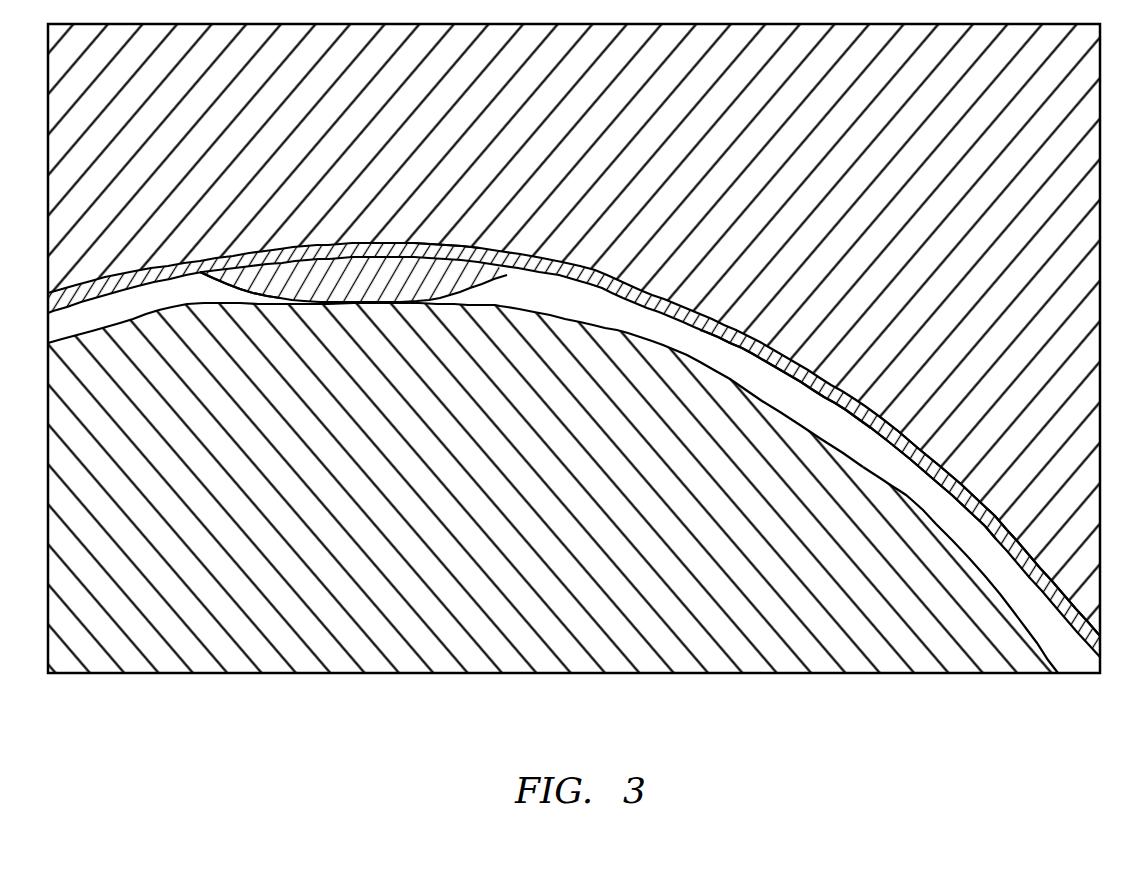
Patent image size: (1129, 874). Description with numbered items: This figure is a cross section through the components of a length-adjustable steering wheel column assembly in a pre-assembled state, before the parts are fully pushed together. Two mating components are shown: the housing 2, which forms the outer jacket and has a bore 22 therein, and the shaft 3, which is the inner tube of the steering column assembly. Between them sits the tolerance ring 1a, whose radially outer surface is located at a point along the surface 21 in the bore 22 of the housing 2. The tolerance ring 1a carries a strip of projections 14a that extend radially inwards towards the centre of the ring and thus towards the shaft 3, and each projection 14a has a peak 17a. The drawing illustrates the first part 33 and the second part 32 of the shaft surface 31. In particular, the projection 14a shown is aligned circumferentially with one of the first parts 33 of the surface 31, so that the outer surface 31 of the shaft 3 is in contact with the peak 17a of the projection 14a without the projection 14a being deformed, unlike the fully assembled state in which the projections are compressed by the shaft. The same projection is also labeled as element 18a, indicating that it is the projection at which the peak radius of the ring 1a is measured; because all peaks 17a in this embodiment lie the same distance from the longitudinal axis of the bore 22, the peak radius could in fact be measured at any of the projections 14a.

The housing 2 is at (965, 219).
The shaft 3 is at (385, 542).
The tolerance ring 1a is at (912, 446).
The surface 21 is at (990, 508).
The bore 22 is at (828, 427).
The outer surface 31 is at (904, 500).
The second part 32 is at (626, 334).
The first part 33 is at (452, 310).
The projection 14a is at (273, 263).
The projection at which the peak radius is measured 18a is at (353, 267).
The peak 17a is at (412, 240).